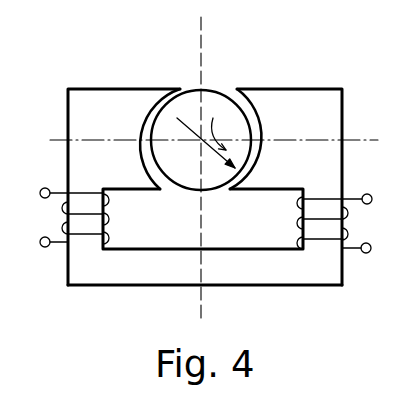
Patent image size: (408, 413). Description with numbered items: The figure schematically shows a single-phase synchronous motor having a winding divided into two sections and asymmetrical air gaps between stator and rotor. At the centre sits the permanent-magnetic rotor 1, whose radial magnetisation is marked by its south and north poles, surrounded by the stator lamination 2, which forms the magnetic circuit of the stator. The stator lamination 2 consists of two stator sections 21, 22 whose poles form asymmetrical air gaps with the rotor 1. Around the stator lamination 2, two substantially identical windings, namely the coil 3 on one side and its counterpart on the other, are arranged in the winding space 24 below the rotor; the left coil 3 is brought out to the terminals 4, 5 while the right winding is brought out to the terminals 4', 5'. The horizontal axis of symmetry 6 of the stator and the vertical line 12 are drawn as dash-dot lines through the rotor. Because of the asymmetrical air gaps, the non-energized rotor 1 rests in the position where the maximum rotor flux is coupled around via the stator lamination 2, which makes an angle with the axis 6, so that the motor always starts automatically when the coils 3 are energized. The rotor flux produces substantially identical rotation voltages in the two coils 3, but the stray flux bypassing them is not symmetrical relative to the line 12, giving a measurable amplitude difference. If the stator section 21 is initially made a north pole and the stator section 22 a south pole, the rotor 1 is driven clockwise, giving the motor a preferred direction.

The permanent-magnetic rotor 1 is at (207, 99).
The stator lamination 2 is at (231, 267).
The coil 3 is at (110, 219).
The terminal 4 is at (71, 181).
The terminal 5 is at (53, 230).
The terminal 4' is at (337, 185).
The terminal 5' is at (370, 244).
The axis of symmetry 6 is at (360, 140).
The line 12 is at (200, 45).
The stator section 21 is at (280, 97).
The stator section 22 is at (133, 100).
The winding space 24 is at (245, 197).